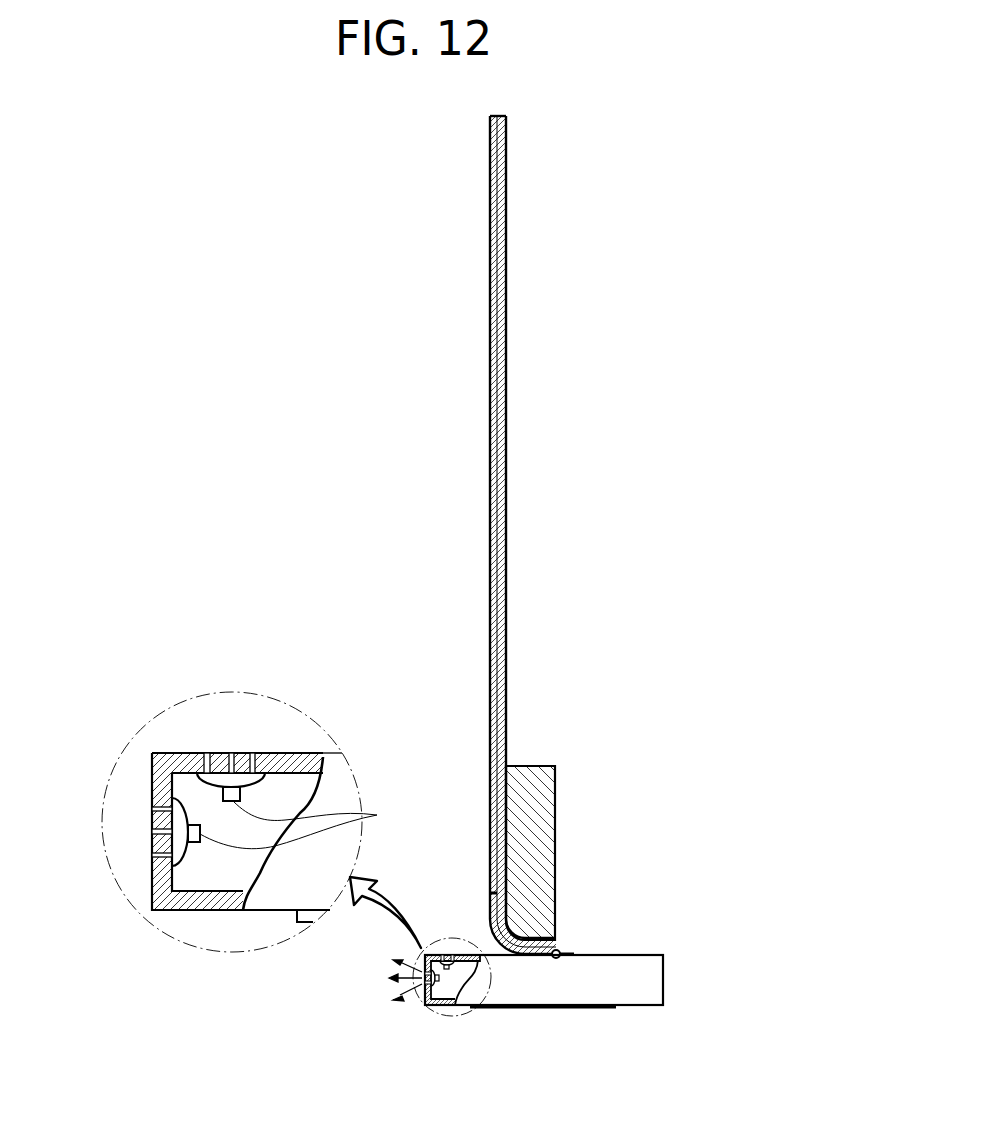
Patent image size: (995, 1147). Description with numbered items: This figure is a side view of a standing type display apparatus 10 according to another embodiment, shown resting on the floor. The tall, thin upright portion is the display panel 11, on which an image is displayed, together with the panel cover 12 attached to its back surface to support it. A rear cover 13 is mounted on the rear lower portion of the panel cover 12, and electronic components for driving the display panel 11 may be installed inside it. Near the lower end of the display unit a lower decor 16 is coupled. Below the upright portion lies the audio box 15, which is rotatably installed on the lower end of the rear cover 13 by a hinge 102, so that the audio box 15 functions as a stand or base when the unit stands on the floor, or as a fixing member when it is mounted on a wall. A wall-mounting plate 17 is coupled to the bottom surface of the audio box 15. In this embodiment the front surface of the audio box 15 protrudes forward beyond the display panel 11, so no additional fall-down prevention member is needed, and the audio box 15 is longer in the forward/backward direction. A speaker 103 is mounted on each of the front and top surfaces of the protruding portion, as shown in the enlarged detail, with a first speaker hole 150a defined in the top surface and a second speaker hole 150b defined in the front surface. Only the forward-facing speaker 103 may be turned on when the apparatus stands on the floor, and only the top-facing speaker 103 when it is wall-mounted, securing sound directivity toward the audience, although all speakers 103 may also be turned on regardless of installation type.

The display apparatus 10 is at (630, 182).
The display panel 11 is at (490, 263).
The panel cover 12 is at (506, 198).
The rear cover 13 is at (548, 797).
The audio box 15 is at (578, 998).
The lower decor 16 is at (490, 905).
The wall-mounting plate 17 is at (518, 1009).
The hinge 102 is at (559, 952).
The speaker 103 is at (377, 815).
The first speaker hole 150a is at (232, 753).
The second speaker hole 150b is at (152, 830).